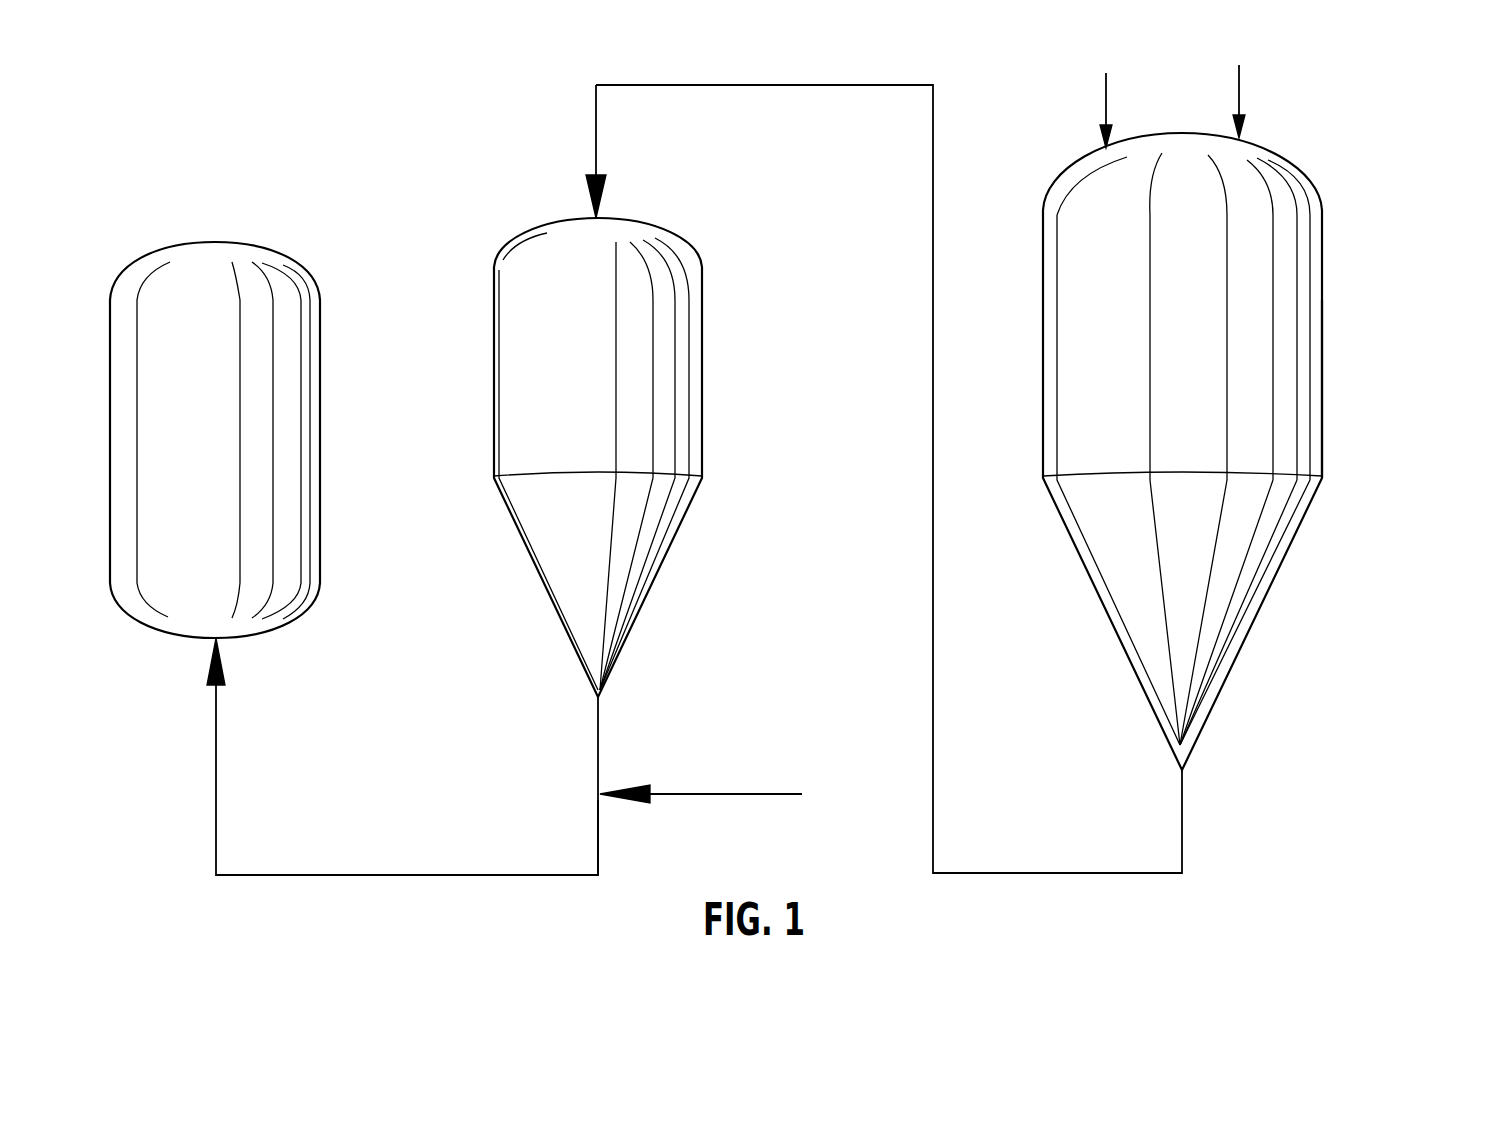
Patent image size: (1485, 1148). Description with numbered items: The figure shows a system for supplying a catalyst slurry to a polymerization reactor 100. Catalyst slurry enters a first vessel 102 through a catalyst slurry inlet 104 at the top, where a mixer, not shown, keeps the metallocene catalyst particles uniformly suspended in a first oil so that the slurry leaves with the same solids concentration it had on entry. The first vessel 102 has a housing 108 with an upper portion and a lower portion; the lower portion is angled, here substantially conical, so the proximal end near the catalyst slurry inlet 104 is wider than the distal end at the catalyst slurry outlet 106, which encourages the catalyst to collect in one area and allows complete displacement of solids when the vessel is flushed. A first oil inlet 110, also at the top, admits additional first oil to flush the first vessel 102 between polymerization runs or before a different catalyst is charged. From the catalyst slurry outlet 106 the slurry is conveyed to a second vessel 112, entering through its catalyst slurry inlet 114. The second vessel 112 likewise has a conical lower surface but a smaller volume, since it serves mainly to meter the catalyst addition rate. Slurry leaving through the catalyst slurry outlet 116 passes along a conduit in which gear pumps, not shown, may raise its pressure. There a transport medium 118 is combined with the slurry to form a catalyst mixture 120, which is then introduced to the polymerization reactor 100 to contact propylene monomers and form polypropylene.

The polymerization reactor 100 is at (270, 250).
The first vessel 102 is at (1365, 180).
The catalyst slurry inlet 104 is at (1106, 95).
The catalyst slurry outlet 106 is at (1182, 770).
The housing 108 is at (1322, 353).
The first oil inlet 110 is at (1239, 92).
The second vessel 112 is at (747, 280).
The catalyst slurry inlet 114 is at (596, 140).
The catalyst slurry outlet 116 is at (598, 697).
The transport medium 118 is at (733, 794).
The catalyst mixture 120 is at (598, 842).